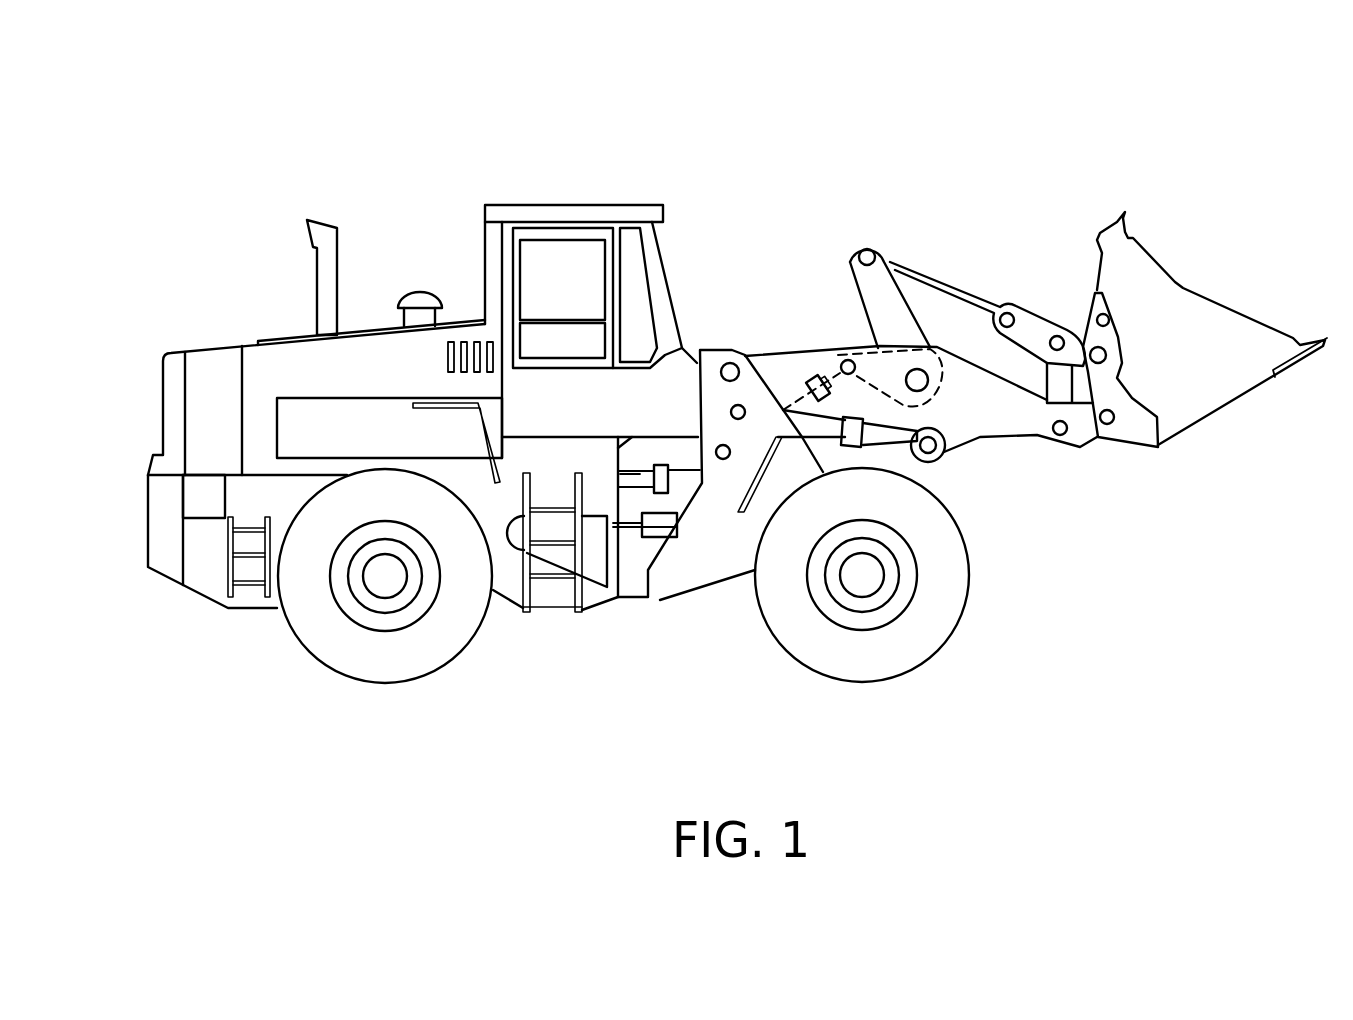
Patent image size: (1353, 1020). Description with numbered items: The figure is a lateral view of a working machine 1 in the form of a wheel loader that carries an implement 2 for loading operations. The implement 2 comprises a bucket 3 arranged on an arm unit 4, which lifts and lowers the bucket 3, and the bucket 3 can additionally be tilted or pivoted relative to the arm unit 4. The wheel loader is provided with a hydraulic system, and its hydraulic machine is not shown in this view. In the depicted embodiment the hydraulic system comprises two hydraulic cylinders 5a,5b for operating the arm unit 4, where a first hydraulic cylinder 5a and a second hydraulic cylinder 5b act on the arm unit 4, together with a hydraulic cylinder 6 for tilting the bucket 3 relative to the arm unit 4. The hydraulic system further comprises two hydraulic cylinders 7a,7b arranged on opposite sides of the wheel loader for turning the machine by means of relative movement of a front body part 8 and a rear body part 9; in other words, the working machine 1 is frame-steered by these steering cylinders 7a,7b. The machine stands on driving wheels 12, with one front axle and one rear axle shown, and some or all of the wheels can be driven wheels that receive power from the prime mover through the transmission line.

The working machine 1 is at (444, 112).
The implement 2 is at (1048, 244).
The bucket 3 is at (1190, 383).
The arm unit 4 is at (1018, 425).
The hydraulic cylinders 5a,5b is at (900, 457).
The hydraulic cylinder 5a is at (852, 432).
The hydraulic cylinder 5b is at (904, 442).
The hydraulic cylinder 6 is at (812, 380).
The hydraulic cylinders 7a,7b is at (680, 480).
The front body part 8 is at (685, 567).
The rear body part 9 is at (210, 570).
The driving wheels 12 is at (380, 583).